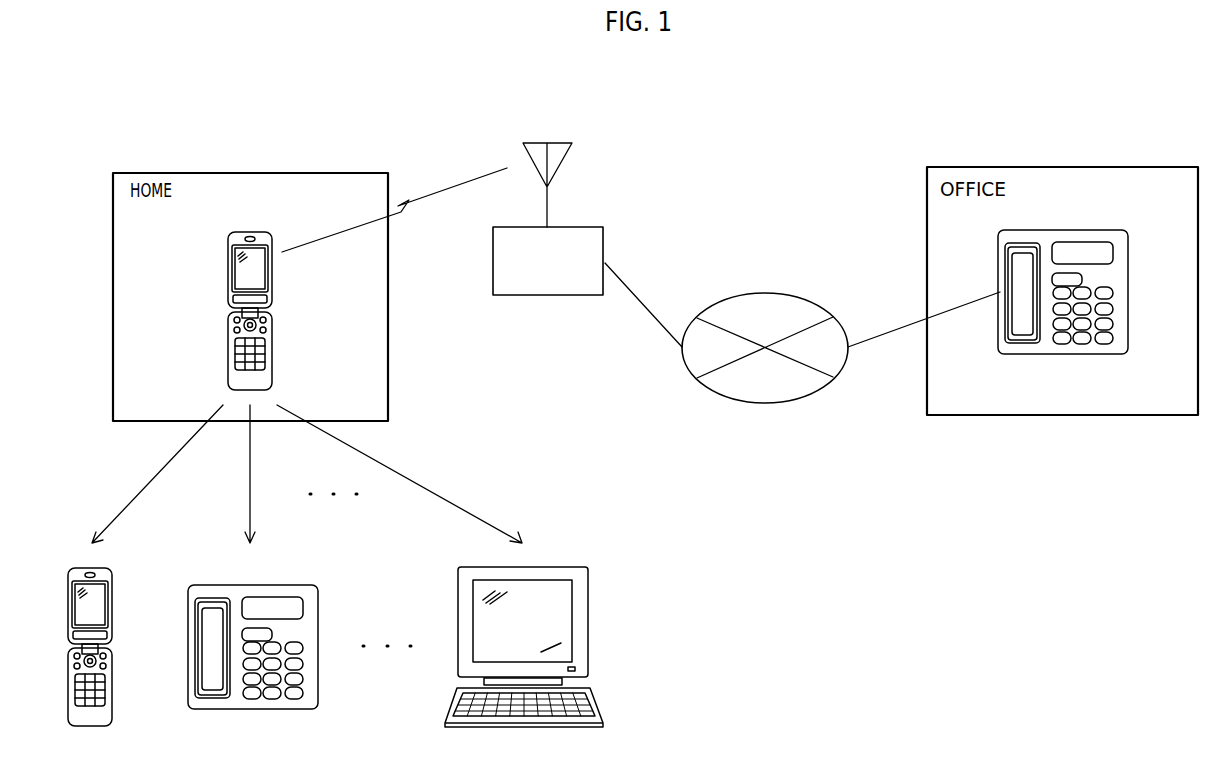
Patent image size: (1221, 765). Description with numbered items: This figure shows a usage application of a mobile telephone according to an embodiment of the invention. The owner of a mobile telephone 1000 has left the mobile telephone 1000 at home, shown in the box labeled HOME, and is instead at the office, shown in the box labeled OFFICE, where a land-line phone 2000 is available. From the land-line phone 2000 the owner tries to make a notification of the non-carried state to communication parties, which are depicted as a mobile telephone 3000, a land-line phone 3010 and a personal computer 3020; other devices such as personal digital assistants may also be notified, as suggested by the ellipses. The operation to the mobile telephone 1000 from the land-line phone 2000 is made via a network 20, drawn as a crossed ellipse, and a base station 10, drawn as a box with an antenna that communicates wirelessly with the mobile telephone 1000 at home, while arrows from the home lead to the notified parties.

The mobile telephone 1000 is at (248, 232).
The base station 10 is at (603, 227).
The network 20 is at (763, 293).
The land-line phone 2000 is at (1092, 230).
The mobile telephone 3000 is at (108, 568).
The land-line phone 3010 is at (280, 585).
The personal computer 3020 is at (585, 567).